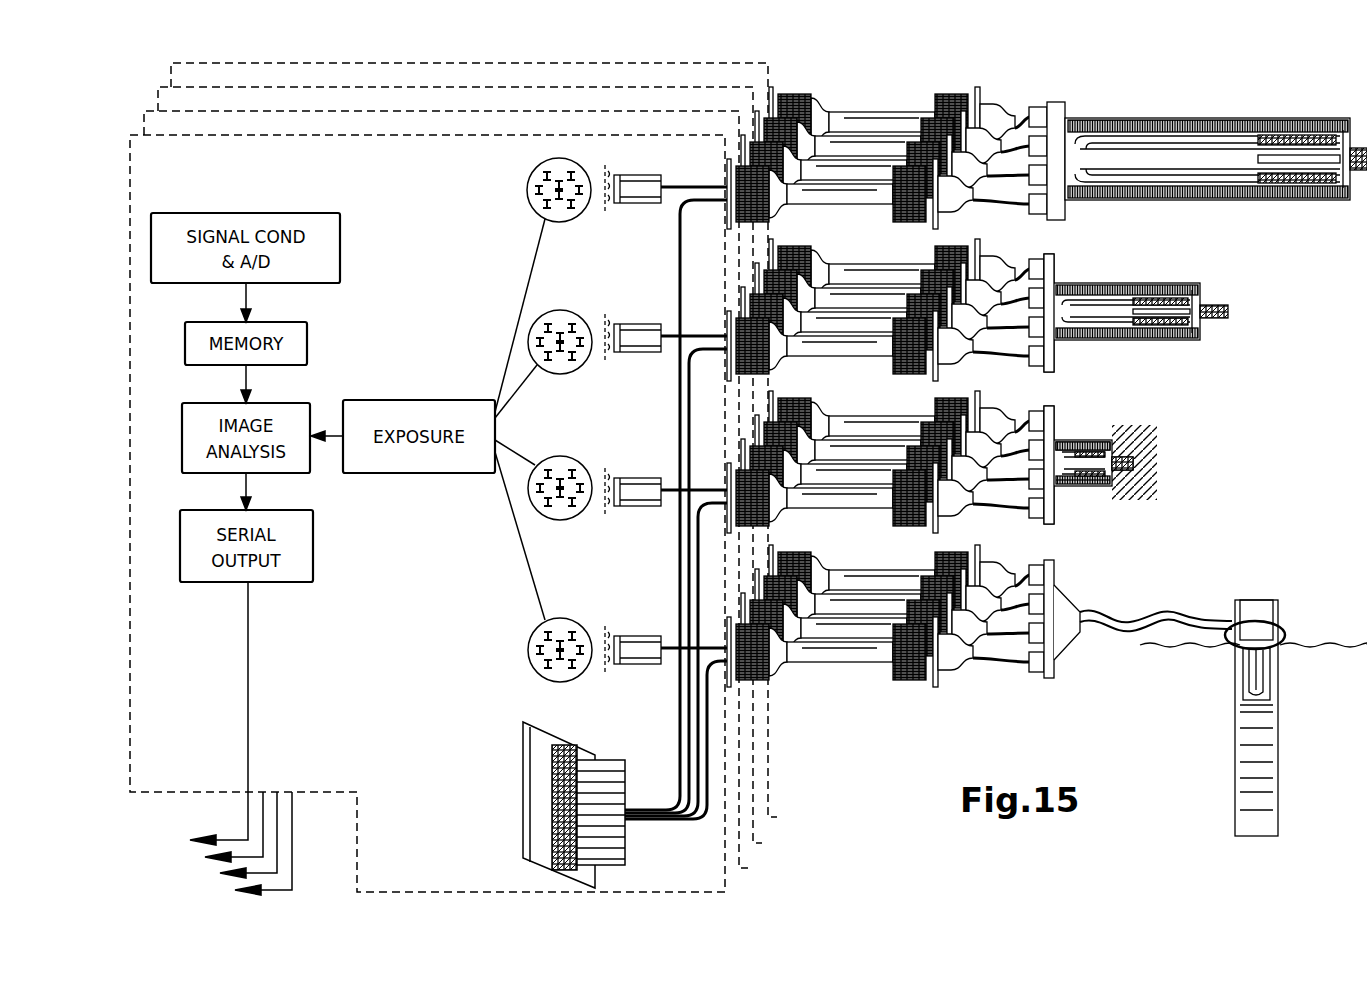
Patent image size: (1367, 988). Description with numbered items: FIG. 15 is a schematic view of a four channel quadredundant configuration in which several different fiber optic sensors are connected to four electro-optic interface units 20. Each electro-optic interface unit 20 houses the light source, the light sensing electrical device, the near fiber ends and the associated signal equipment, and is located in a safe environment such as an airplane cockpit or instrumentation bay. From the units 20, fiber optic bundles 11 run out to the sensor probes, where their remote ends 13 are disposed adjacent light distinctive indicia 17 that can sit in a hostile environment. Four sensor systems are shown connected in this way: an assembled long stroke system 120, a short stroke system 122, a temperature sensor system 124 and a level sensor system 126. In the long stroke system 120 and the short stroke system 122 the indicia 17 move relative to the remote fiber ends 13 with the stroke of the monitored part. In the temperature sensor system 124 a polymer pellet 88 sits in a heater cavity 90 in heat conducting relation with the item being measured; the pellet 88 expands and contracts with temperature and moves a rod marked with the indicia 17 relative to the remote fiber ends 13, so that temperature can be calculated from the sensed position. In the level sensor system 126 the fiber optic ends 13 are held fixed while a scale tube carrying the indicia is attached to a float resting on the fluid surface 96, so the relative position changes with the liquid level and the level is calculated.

The fiber optic bundles 11 is at (875, 122).
The remote ends 13 is at (1277, 138).
The light distinctive indicia 17 is at (1143, 118).
The electro-optic interface unit 20 is at (772, 818).
The polymer pellet 88 is at (1140, 440).
The heater cavity 90 is at (1062, 440).
The fluid surface 96 is at (1320, 645).
The long stroke system 120 is at (1210, 450).
The short stroke system 122 is at (1203, 330).
The temperature sensor system 124 is at (1125, 490).
The level sensor system 126 is at (1228, 656).